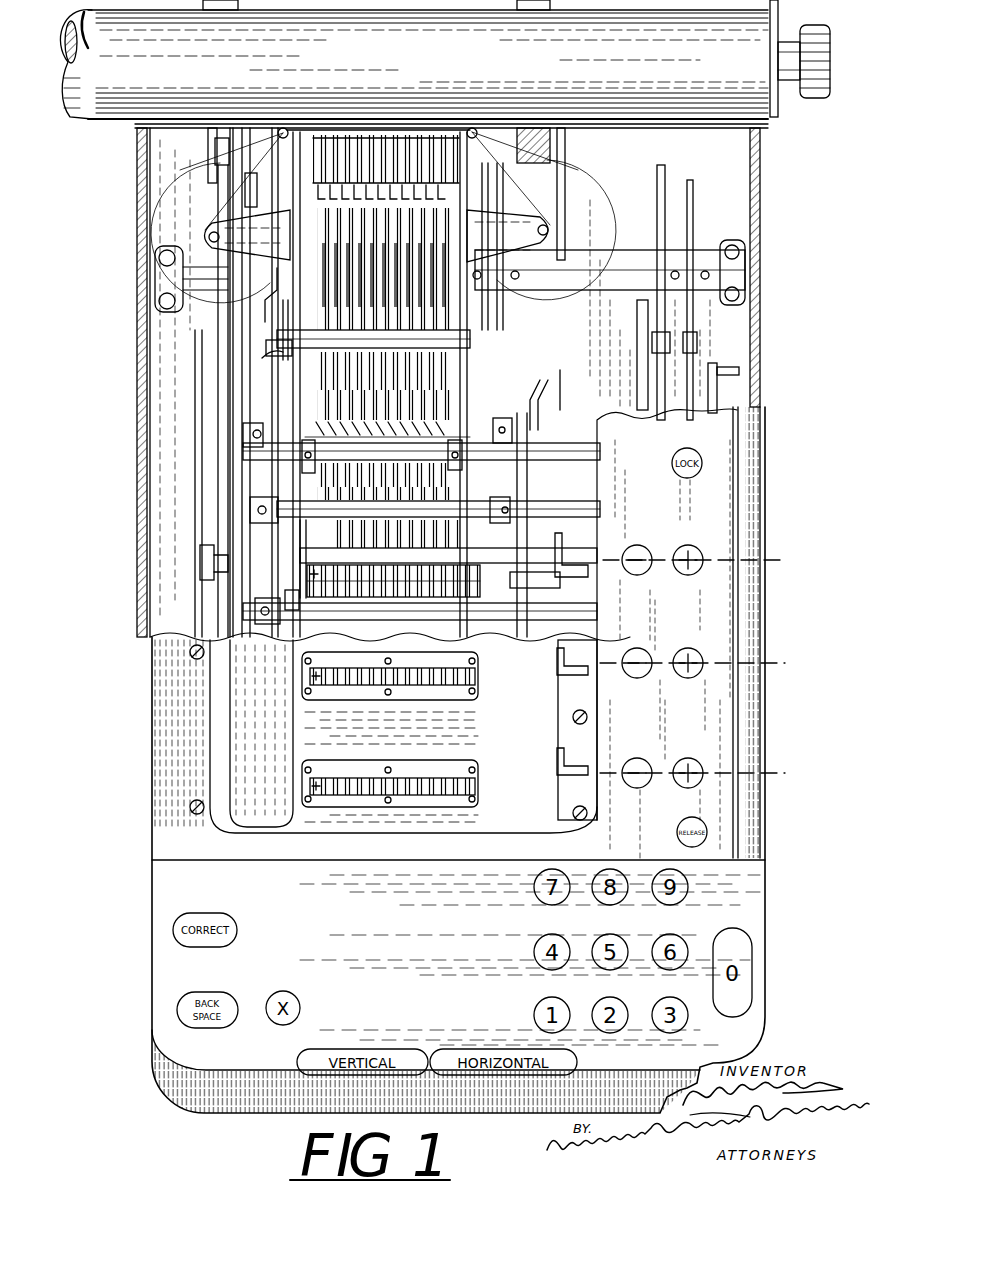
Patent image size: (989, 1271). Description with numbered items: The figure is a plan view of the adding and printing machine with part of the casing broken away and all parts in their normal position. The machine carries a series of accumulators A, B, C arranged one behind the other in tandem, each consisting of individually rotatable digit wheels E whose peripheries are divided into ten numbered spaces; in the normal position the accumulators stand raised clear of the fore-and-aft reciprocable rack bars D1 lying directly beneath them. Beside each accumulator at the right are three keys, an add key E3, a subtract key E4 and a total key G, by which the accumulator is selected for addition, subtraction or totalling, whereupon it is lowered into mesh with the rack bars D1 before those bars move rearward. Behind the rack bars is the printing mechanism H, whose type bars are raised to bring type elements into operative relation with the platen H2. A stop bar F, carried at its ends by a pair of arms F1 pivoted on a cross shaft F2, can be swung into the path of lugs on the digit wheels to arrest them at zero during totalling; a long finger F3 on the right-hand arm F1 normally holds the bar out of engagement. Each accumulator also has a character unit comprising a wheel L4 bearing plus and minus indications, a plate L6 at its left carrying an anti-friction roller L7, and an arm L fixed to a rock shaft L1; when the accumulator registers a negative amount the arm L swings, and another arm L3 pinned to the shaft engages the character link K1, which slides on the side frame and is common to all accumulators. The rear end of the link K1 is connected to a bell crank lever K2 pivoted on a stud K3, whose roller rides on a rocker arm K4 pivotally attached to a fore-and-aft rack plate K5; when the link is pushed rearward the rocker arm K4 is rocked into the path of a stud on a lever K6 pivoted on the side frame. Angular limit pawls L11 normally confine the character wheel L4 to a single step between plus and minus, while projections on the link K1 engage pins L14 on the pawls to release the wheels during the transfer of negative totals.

The printing mechanism H is at (362, 135).
The platen H2 is at (445, 59).
The character link K1 is at (230, 418).
The bell crank lever K2 is at (255, 311).
The stud K3 is at (230, 340).
The rocker arm K4 is at (263, 382).
The fore-and-aft rack plate K5 is at (290, 318).
The lever K6 is at (266, 362).
The rack bars D1 is at (242, 463).
The arm L is at (289, 518).
The limit pawls L11 is at (262, 535).
The arm L3 is at (214, 568).
The pins L14 is at (298, 565).
The anti-friction roller L7 is at (303, 574).
The rock shaft L1 is at (237, 605).
The character wheel L4 is at (312, 676).
The plate L6 is at (300, 642).
The stop bar F is at (480, 641).
The arms F1 is at (521, 626).
The cross shaft F2 is at (542, 505).
The long finger F3 is at (513, 579).
The total key G is at (562, 548).
The digit wheels E is at (366, 620).
The add key E3 is at (697, 546).
The subtract key E4 is at (634, 546).
The accumulator A is at (704, 560).
The accumulator B is at (703, 658).
The accumulator C is at (705, 775).